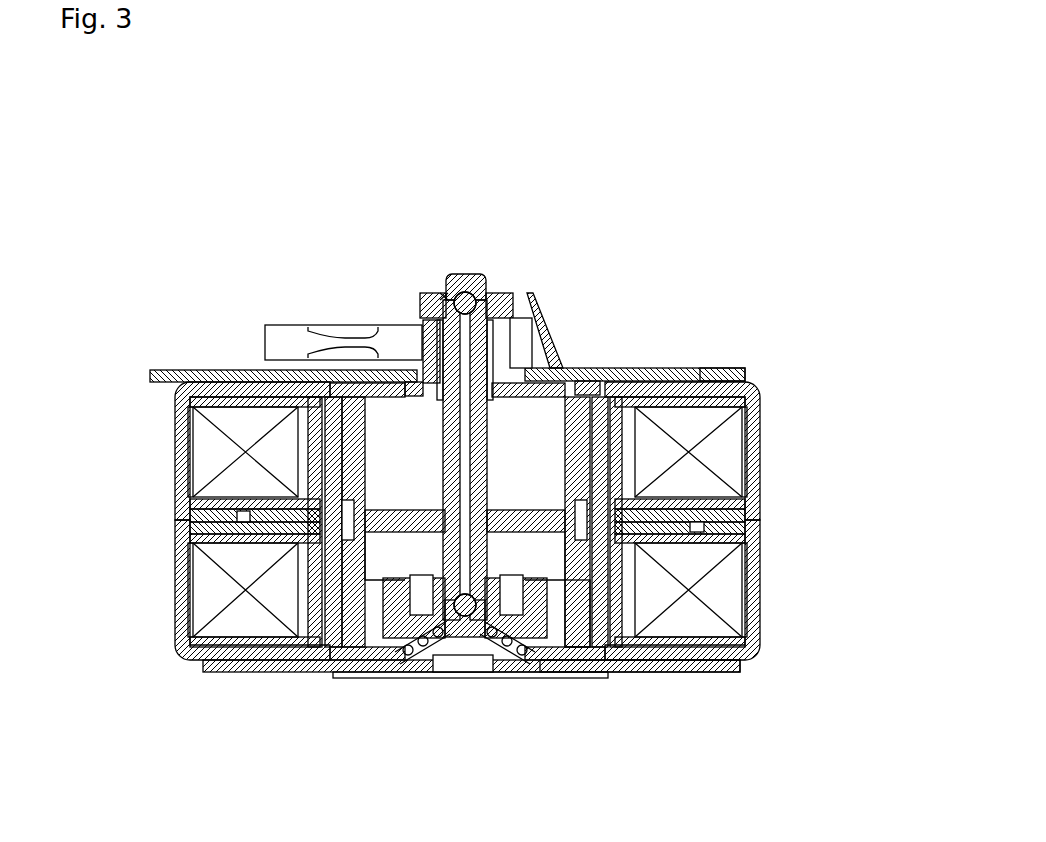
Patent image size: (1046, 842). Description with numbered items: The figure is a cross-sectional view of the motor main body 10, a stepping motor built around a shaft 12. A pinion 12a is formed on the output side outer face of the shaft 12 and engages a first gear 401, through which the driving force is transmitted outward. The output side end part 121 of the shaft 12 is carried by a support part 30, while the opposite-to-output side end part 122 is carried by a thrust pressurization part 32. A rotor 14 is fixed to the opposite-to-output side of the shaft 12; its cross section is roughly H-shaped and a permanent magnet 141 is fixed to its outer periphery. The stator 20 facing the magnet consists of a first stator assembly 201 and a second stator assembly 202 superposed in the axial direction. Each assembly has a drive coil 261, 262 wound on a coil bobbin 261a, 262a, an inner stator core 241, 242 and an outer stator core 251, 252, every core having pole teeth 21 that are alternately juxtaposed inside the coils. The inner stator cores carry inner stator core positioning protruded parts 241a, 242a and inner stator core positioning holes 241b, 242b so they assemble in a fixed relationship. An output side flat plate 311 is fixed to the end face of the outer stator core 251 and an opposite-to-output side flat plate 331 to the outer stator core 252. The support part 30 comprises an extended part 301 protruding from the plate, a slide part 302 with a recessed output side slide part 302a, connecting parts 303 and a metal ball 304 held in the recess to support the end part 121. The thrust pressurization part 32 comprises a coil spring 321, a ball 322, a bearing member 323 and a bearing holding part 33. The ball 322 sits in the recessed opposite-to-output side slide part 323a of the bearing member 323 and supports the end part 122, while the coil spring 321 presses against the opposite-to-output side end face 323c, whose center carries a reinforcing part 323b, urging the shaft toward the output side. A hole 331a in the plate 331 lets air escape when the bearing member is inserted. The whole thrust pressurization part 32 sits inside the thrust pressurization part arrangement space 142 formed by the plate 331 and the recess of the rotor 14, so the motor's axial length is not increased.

The motor main body 10 is at (190, 128).
The shaft 12 is at (465, 434).
The pinion 12a is at (440, 345).
The output side end part 121 is at (428, 330).
The opposite-to-output side end part 122 is at (425, 580).
The rotor 14 is at (585, 368).
The permanent magnet 141 is at (650, 368).
The thrust pressurization part arrangement space 142 is at (600, 612).
The stator 20 is at (858, 462).
The first stator assembly 201 is at (778, 447).
The second stator assembly 202 is at (778, 598).
The pole teeth 21 is at (340, 450).
The inner stator core 241 is at (200, 514).
The inner stator core positioning protruded part 241a is at (750, 514).
The inner stator core positioning hole 241b is at (240, 512).
The inner stator core 242 is at (200, 530).
The inner stator core positioning protruded part 242a is at (215, 546).
The inner stator core positioning hole 242b is at (750, 530).
The outer stator core 251 is at (185, 452).
The outer stator core 252 is at (185, 596).
The drive coil 261 is at (200, 423).
The coil bobbin 261a is at (180, 381).
The drive coil 262 is at (205, 621).
The coil bobbin 262a is at (190, 655).
The support part 30 is at (650, 180).
The extended part 301 is at (520, 330).
The slide part 302 is at (500, 294).
The output side slide part 302a is at (445, 292).
The connecting parts 303 is at (550, 322).
The ball 304 is at (470, 278).
The output side flat plate 311 is at (705, 368).
The thrust pressurization part 32 is at (515, 793).
The coil spring 321 is at (430, 650).
The ball 322 is at (478, 650).
The bearing member 323 is at (486, 703).
The opposite-to-output side slide part 323a is at (540, 640).
The reinforcing part 323b is at (522, 670).
The opposite-to-output side end face 323c is at (410, 656).
The bearing holding part 33 is at (350, 680).
The opposite-to-output side flat plate 331 is at (700, 673).
The hole 331a is at (485, 680).
The first gear 401 is at (300, 330).